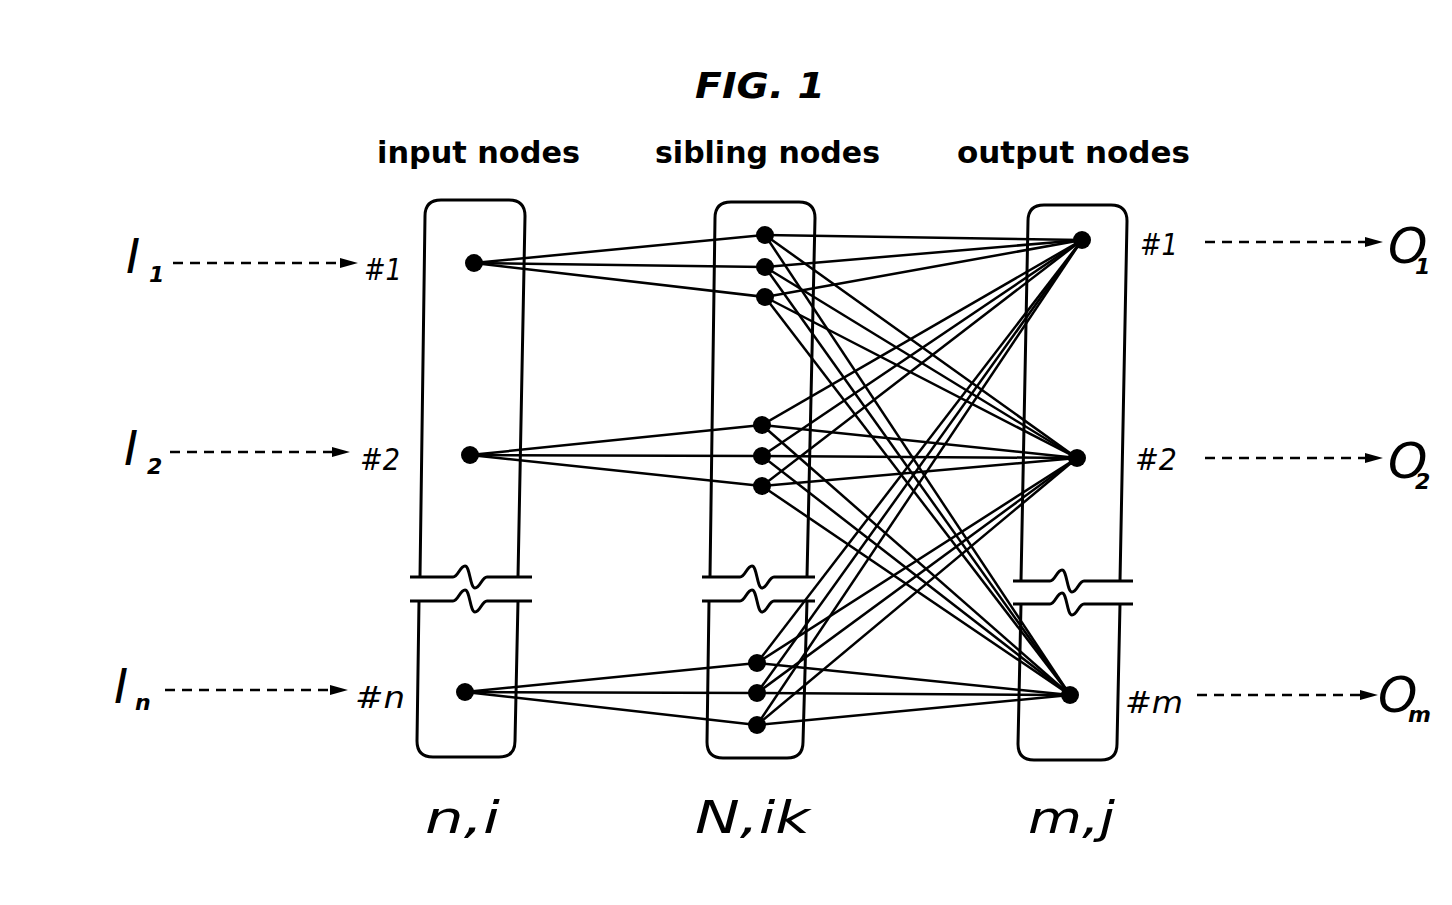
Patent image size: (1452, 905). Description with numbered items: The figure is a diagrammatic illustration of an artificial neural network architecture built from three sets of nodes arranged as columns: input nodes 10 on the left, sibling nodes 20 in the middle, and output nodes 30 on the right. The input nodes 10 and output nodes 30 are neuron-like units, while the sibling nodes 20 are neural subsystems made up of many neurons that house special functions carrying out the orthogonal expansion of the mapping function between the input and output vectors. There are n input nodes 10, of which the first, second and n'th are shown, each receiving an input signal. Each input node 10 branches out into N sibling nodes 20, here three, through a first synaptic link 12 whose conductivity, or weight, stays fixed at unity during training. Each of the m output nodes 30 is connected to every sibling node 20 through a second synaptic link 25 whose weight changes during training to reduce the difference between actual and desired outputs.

The input nodes 10 is at (445, 757).
The first synaptic link 12 is at (535, 700).
The sibling nodes 20 is at (737, 758).
The second synaptic link 25 is at (965, 200).
The output nodes 30 is at (1030, 758).